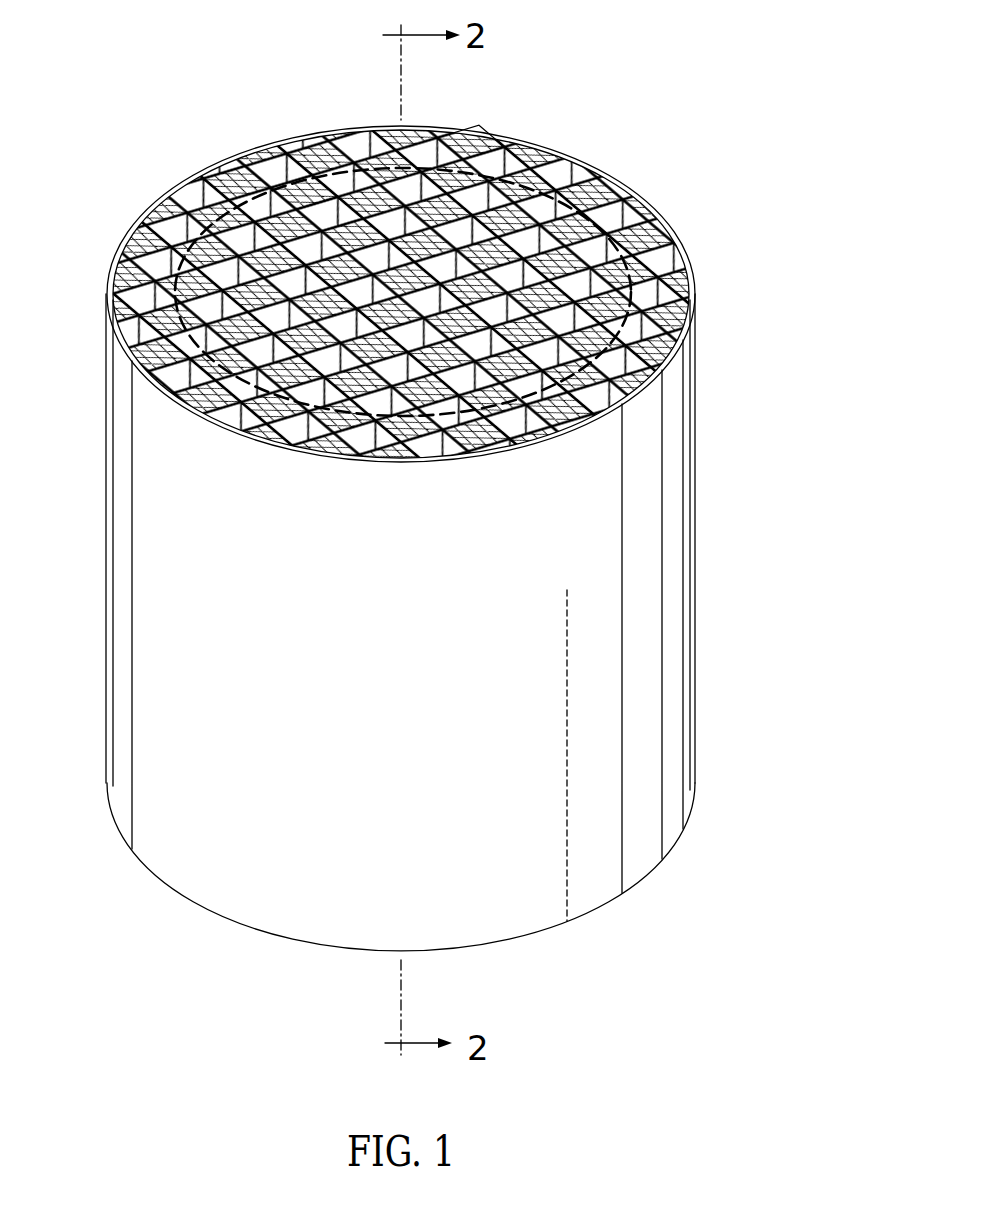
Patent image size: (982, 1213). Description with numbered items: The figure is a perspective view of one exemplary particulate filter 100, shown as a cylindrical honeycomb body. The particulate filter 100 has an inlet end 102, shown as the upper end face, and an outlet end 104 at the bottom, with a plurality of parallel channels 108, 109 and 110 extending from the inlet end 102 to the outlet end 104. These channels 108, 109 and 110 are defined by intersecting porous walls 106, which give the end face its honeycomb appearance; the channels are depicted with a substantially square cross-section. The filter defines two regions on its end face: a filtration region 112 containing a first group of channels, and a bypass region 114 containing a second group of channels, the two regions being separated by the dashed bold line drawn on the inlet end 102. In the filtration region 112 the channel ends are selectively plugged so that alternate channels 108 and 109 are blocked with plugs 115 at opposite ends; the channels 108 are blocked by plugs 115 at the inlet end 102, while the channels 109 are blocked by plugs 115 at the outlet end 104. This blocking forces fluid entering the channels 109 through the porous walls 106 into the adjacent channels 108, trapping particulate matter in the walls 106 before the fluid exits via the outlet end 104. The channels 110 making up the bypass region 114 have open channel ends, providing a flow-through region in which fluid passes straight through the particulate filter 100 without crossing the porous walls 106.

The particulate filter 100 is at (622, 76).
The inlet end 102 is at (603, 173).
The outlet end 104 is at (543, 930).
The porous walls 106 is at (452, 148).
The channels 108 is at (282, 195).
The channels 109 is at (335, 208).
The channels 110 is at (242, 177).
The filtration region 112 is at (637, 219).
The bypass region 114 is at (692, 278).
The plugs 115 is at (168, 262).